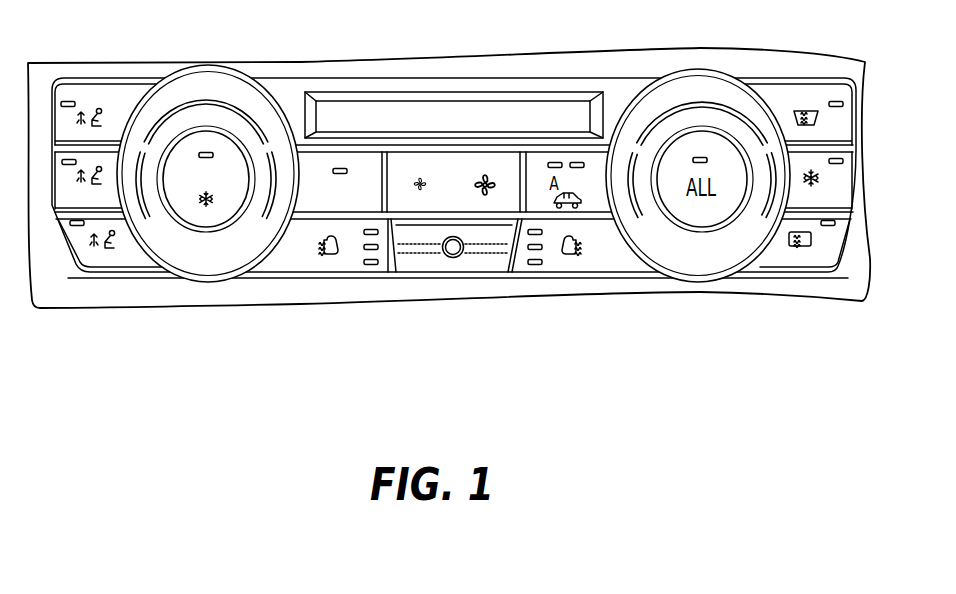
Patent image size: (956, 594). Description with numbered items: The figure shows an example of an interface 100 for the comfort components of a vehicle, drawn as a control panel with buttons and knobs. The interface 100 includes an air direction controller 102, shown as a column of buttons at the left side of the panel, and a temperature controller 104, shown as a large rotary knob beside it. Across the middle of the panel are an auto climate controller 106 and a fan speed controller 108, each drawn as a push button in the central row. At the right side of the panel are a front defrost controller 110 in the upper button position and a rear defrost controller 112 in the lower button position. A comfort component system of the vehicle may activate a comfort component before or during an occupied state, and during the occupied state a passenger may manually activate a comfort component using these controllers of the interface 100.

The interface 100 is at (538, 72).
The air direction controller 102 is at (98, 83).
The temperature controller 104 is at (213, 125).
The auto climate controller 106 is at (370, 183).
The fan speed controller 108 is at (463, 183).
The front defrost controller 110 is at (795, 128).
The rear defrost controller 112 is at (792, 242).